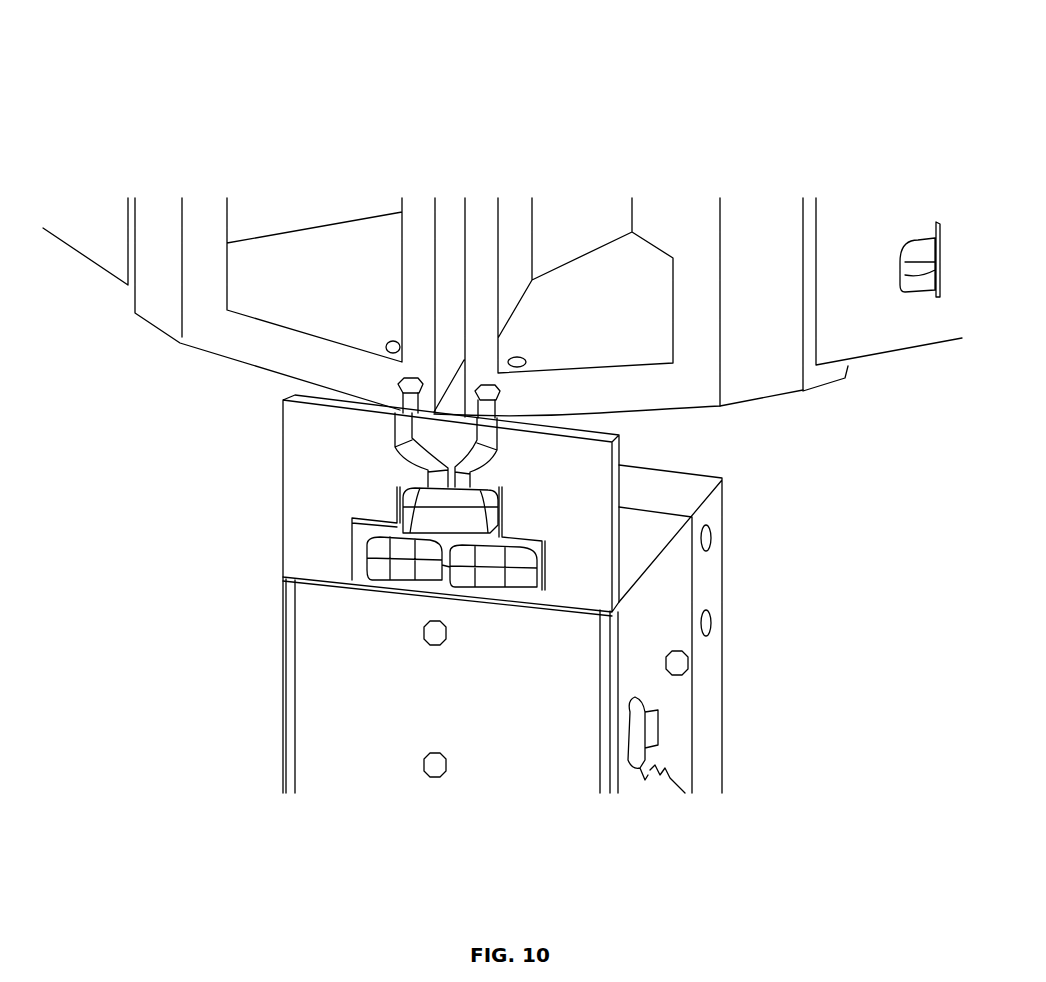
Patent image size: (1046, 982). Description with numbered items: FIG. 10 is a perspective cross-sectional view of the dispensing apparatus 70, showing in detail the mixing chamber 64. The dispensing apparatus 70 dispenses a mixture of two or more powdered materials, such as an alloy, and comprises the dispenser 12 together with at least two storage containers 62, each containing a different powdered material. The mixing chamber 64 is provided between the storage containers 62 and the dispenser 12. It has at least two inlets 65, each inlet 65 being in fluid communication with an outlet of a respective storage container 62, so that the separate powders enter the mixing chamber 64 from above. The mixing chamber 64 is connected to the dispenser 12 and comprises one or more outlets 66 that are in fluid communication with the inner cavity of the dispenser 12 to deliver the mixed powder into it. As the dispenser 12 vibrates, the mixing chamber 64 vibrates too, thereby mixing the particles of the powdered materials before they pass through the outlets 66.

The dispenser 12 is at (320, 684).
The storage container 62 is at (228, 336).
The mixing chamber 64 is at (293, 489).
The inlet 65 is at (503, 425).
The outlet 66 is at (522, 594).
The dispensing apparatus 70 is at (675, 72).